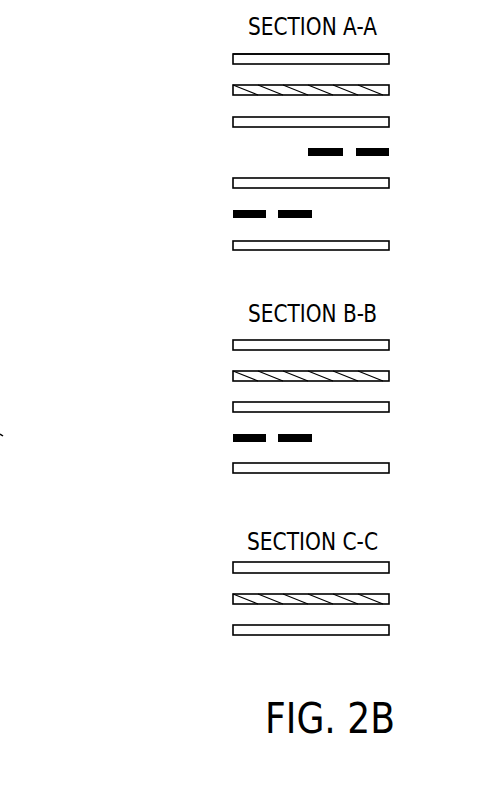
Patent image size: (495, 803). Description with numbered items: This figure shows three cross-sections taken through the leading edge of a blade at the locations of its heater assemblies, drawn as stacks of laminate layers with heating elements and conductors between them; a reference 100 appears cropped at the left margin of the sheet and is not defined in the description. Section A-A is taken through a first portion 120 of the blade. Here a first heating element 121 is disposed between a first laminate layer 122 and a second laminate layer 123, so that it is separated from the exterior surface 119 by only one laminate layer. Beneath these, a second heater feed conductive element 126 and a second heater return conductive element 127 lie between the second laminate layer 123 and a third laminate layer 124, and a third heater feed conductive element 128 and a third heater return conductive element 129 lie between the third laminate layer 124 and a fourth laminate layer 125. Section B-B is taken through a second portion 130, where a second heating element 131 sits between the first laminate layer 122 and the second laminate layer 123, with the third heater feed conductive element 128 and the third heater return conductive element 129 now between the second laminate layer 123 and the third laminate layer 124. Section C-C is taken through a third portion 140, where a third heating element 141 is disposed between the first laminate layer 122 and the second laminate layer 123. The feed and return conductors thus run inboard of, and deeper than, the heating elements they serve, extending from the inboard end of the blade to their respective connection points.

The display device 100 is at (16, 455).
The exterior surface 119 is at (240, 54).
The first portion 120 is at (112, 84).
The first heating element 121 is at (365, 90).
The first laminate layer 122 is at (240, 58).
The second laminate layer 123 is at (240, 122).
The third laminate layer 124 is at (240, 184).
The fourth laminate layer 125 is at (240, 245).
The second heater feed conductive element 126 is at (310, 150).
The second heater return conductive element 127 is at (385, 155).
The third heater feed conductive element 128 is at (240, 212).
The third heater return conductive element 129 is at (310, 217).
The second portion 130 is at (117, 364).
The second heating element 131 is at (365, 376).
The third portion 140 is at (102, 591).
The third heating element 141 is at (365, 599).